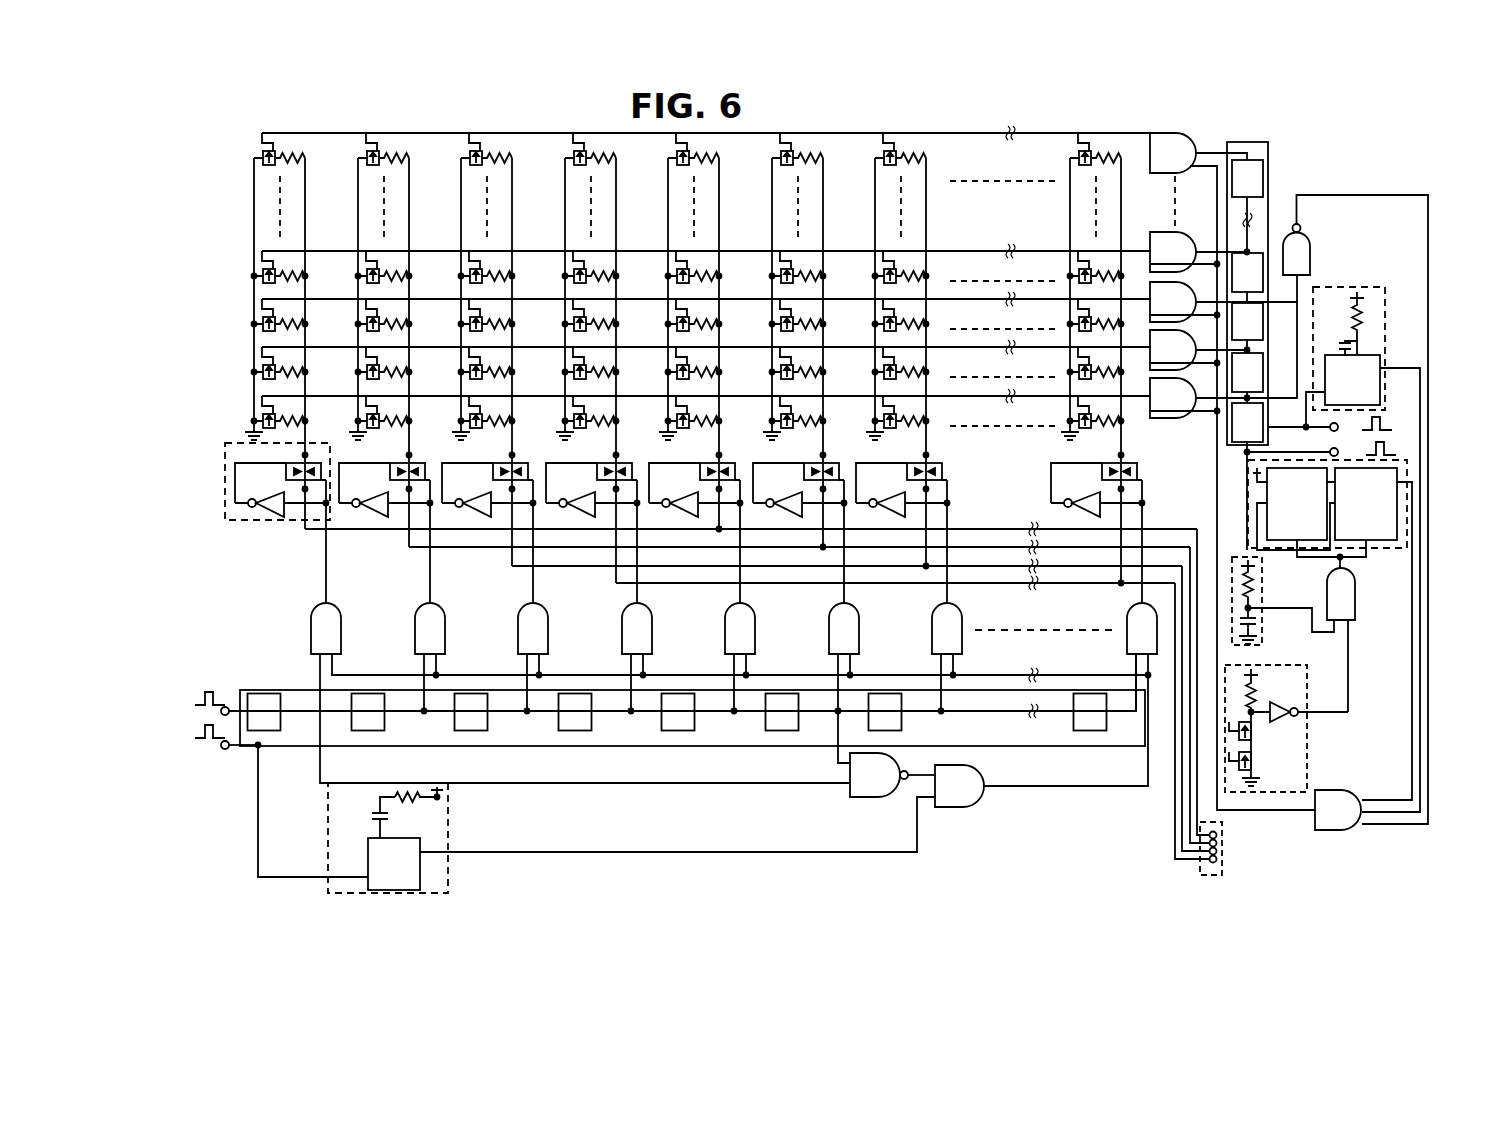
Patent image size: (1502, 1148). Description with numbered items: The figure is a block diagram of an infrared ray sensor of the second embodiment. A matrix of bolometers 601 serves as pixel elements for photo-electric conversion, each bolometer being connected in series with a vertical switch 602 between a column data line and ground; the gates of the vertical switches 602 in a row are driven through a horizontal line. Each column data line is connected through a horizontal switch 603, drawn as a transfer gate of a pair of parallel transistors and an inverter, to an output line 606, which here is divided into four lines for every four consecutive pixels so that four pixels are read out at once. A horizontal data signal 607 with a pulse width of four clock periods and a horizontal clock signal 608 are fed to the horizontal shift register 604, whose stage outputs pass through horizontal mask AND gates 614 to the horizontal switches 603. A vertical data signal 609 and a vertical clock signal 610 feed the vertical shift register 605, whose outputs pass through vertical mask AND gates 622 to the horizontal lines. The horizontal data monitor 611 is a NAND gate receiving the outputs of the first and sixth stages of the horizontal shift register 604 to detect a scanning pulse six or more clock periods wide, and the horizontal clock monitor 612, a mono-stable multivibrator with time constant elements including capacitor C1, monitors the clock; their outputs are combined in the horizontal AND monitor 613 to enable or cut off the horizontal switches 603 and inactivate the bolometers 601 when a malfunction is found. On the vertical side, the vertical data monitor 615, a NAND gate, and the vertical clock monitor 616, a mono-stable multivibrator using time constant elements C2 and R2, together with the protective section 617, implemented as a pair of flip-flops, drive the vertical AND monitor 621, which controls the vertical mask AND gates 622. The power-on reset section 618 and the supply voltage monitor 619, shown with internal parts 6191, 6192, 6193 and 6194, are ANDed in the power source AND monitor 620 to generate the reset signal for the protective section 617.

The bolometer 601 is at (292, 152).
The vertical switch 602 is at (262, 157).
The horizontal switch 603 is at (240, 522).
The horizontal shift register 604 is at (292, 690).
The vertical shift register 605 is at (1268, 182).
The output line 606 is at (1224, 862).
The horizontal data signal 607 is at (208, 690).
The horizontal clock signal 608 is at (208, 748).
The vertical data signal 609 is at (1330, 452).
The vertical clock signal 610 is at (1400, 428).
The horizontal data monitor 611 is at (865, 798).
The horizontal clock monitor 612 is at (596, 854).
The horizontal AND monitor 613 is at (965, 808).
The horizontal mask AND gate 614 is at (312, 625).
The vertical data monitor 615 is at (1300, 230).
The vertical clock monitor 616 is at (1362, 522).
The protective section 617 is at (1408, 518).
The power-on reset section 618 is at (1262, 588).
The supply voltage monitor 619 is at (1299, 744).
The power source AND monitor 620 is at (1352, 600).
The vertical AND monitor 621 is at (1350, 830).
The vertical mask AND gate 622 is at (1170, 418).
The resistor 6191 is at (1256, 692).
The transistor 6192 is at (1252, 730).
The transistor 6193 is at (1252, 762).
The inverter 6194 is at (1290, 716).
The time constant resistor R2 is at (1362, 312).
The time constant capacitor C1 is at (363, 817).
The time constant capacitor C2 is at (1337, 331).